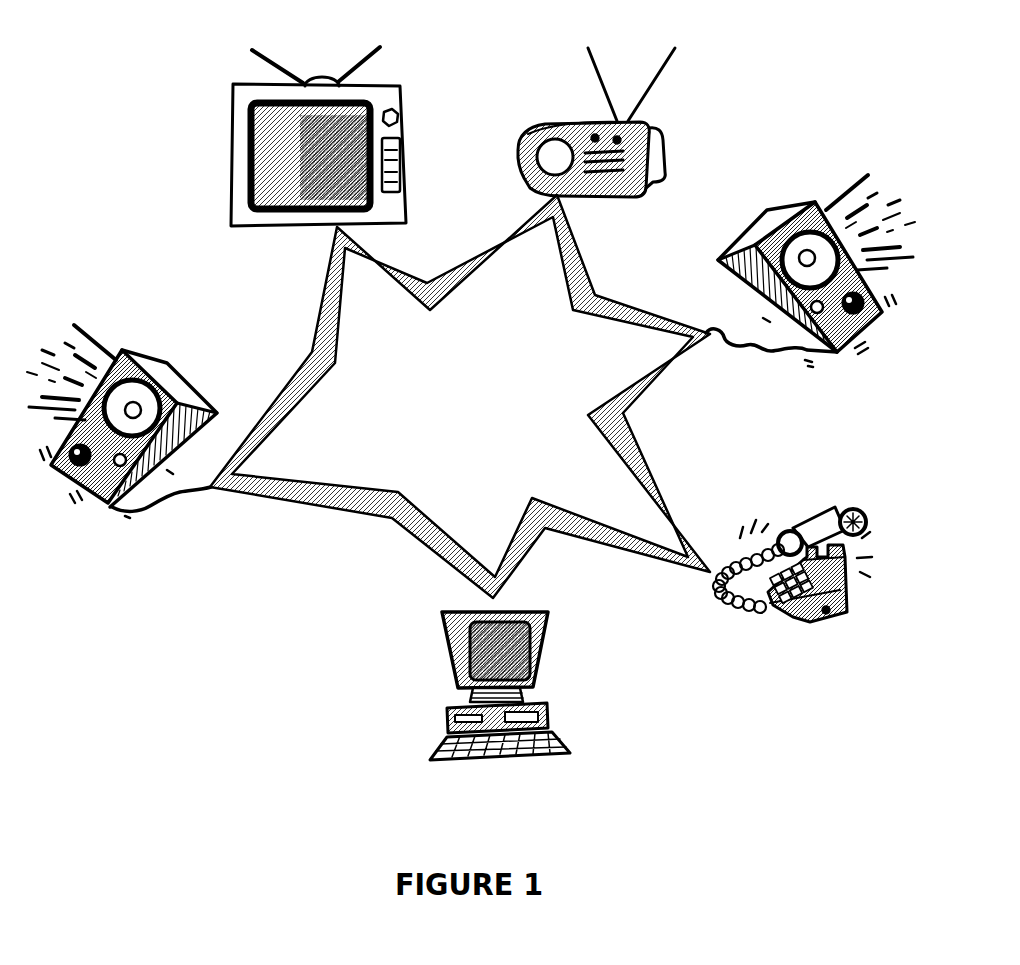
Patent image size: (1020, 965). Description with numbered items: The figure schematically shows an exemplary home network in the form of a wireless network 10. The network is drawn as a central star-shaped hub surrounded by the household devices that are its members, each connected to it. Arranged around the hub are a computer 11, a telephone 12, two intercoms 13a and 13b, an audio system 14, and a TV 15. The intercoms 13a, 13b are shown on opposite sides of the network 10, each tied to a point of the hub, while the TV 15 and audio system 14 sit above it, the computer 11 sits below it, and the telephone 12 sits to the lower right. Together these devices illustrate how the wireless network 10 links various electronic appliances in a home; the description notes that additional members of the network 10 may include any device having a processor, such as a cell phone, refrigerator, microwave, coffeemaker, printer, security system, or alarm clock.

The wireless network 10 is at (469, 420).
The computer 11 is at (527, 698).
The telephone 12 is at (792, 622).
The intercom 13a is at (837, 353).
The intercom 13b is at (130, 509).
The audio system 14 is at (660, 148).
The TV 15 is at (233, 195).